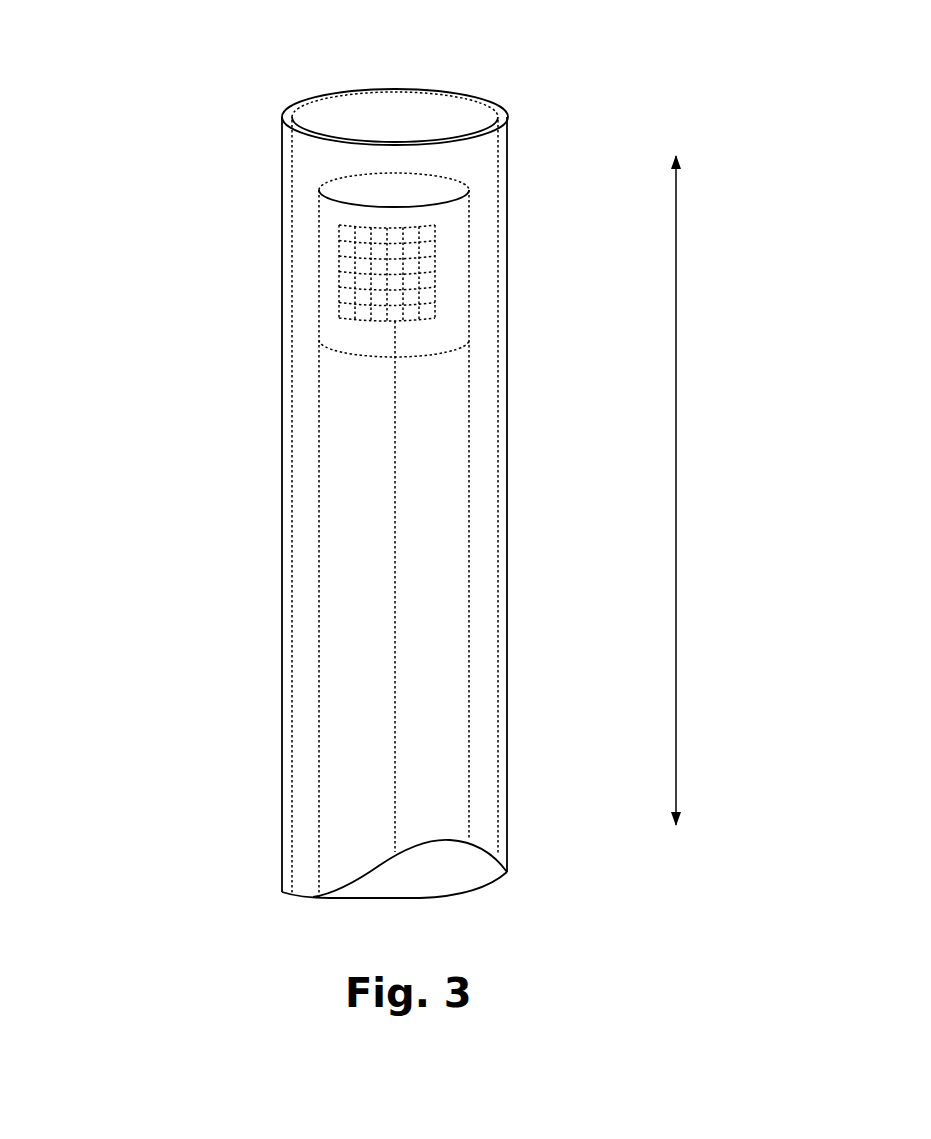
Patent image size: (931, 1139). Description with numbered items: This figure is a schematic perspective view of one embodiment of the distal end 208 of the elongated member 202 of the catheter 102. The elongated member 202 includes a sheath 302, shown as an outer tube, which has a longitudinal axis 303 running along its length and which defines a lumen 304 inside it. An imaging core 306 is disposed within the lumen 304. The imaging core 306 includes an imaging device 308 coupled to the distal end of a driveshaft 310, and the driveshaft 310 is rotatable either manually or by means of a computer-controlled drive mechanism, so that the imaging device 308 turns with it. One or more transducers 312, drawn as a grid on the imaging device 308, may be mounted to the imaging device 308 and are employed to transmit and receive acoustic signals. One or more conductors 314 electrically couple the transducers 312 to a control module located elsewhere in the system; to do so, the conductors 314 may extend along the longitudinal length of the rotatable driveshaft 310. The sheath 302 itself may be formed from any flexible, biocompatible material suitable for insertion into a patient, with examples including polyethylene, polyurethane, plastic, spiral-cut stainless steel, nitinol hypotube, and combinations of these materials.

The catheter 102 is at (93, 109).
The elongated member 202 is at (207, 184).
The distal end 208 is at (147, 426).
The sheath 302 is at (507, 653).
The longitudinal axis 303 is at (676, 429).
The lumen 304 is at (307, 606).
The imaging core 306 is at (484, 471).
The imaging device 308 is at (334, 325).
The driveshaft 310 is at (338, 488).
The transducers 312 is at (445, 274).
The conductors 314 is at (393, 697).